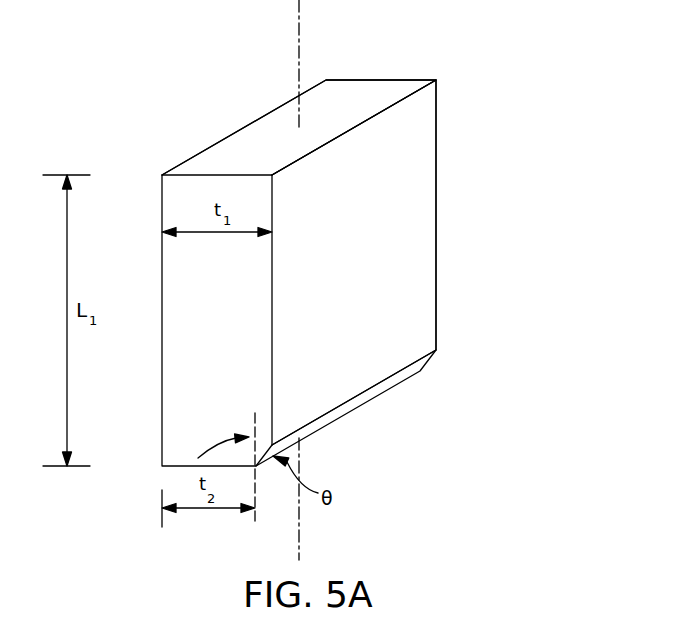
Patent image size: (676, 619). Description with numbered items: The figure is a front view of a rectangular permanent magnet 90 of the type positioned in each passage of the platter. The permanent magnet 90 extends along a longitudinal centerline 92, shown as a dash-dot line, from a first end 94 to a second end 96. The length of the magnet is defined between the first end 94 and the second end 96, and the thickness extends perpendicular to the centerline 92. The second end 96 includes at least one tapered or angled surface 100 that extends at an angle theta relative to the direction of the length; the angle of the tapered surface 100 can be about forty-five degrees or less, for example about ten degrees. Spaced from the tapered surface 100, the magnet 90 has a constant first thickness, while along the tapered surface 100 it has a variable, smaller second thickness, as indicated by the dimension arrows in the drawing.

The permanent magnet 90 is at (182, 256).
The longitudinal centerline 92 is at (301, 28).
The first end 94 is at (443, 34).
The second end 96 is at (463, 329).
The tapered surface 100 is at (355, 400).